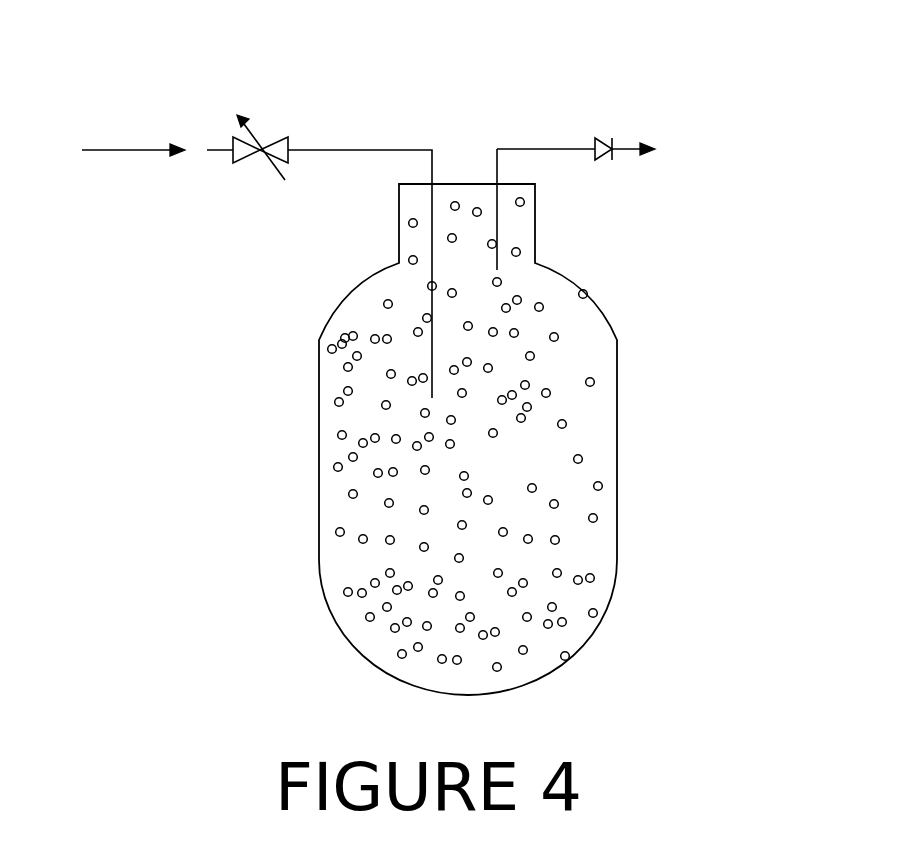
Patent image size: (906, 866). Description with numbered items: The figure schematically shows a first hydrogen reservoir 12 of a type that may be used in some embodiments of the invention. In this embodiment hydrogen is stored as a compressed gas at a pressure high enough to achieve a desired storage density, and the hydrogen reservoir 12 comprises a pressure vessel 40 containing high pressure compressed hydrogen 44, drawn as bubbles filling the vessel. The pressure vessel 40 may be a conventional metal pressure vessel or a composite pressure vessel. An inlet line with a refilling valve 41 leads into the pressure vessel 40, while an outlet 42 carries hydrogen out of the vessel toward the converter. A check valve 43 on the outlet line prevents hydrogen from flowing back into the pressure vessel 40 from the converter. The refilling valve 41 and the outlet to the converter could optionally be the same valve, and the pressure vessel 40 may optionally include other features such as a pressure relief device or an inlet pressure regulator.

The first hydrogen reservoir 12 is at (612, 71).
The pressure vessel 40 is at (319, 522).
The refilling valve 41 is at (252, 158).
The outlet 42 is at (547, 149).
The check valve 43 is at (610, 156).
The high pressure compressed hydrogen 44 is at (465, 435).